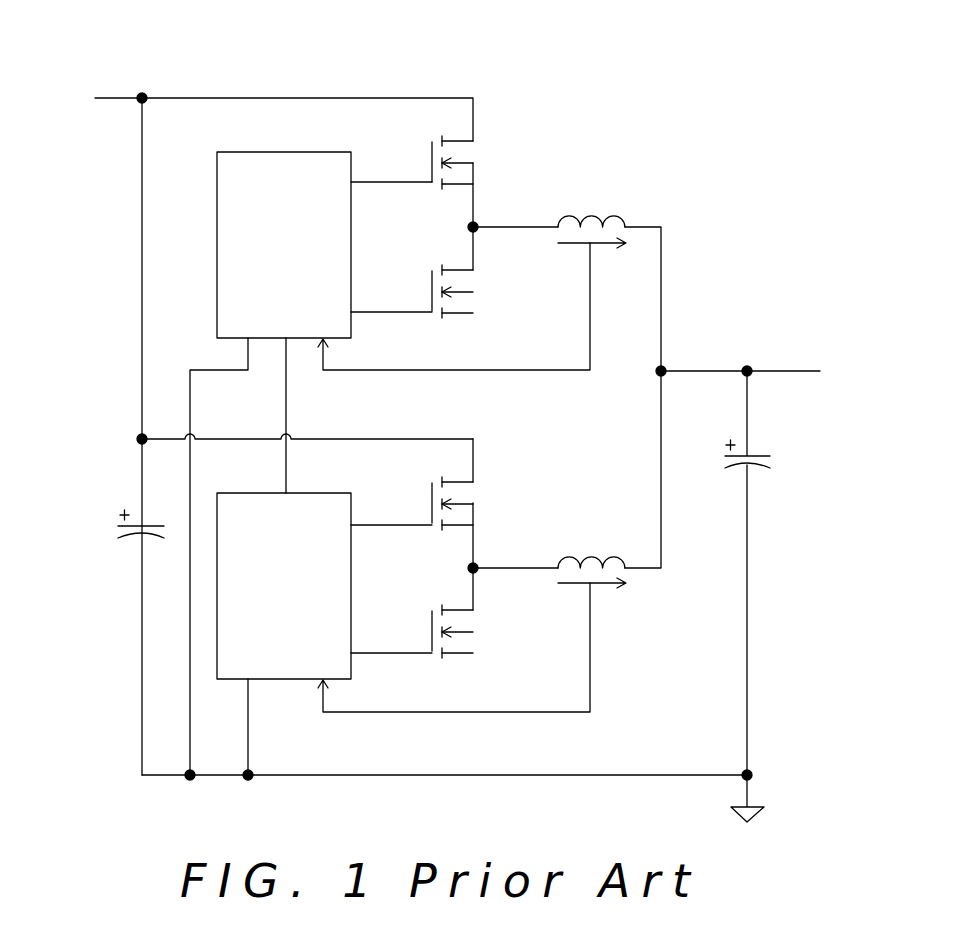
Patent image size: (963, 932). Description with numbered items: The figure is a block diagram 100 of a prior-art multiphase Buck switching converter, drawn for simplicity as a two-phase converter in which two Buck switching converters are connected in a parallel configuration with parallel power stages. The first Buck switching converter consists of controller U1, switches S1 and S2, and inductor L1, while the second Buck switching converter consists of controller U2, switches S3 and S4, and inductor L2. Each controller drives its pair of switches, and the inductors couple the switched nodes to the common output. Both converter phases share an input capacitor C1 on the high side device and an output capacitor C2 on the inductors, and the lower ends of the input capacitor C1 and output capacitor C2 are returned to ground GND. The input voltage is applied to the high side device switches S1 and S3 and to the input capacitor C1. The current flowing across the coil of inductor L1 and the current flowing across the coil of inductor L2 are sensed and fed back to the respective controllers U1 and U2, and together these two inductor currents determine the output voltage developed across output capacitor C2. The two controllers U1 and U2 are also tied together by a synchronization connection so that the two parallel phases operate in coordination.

The block diagram 100 is at (218, 46).
The controller U1 is at (284, 245).
The controller U2 is at (284, 586).
The switch S1 is at (428, 181).
The switch S2 is at (428, 272).
The switch S3 is at (428, 503).
The switch S4 is at (428, 613).
The inductor L1 is at (564, 277).
The inductor L2 is at (564, 472).
The input capacitor C1 is at (147, 536).
The output capacitor C2 is at (762, 573).
The ground GND is at (453, 803).